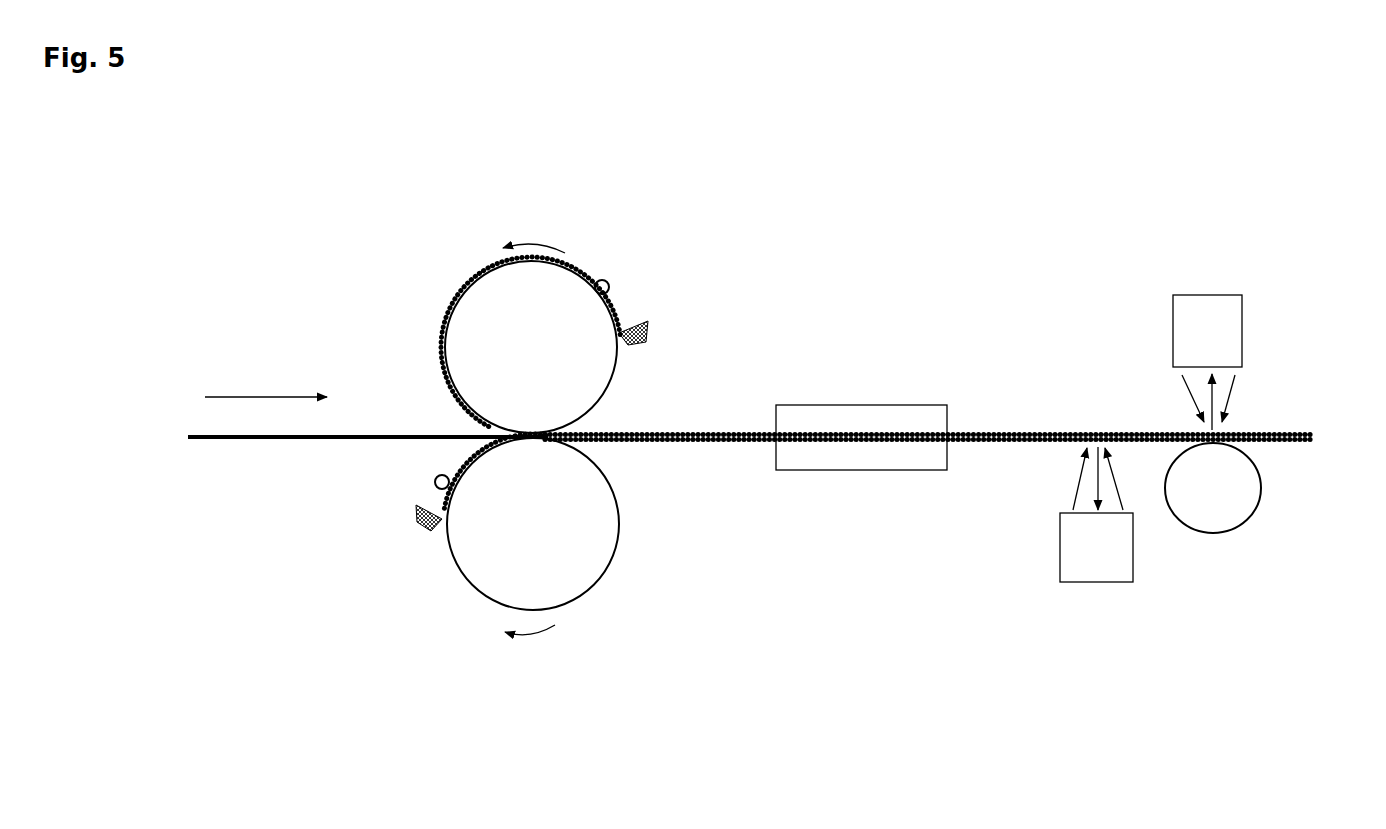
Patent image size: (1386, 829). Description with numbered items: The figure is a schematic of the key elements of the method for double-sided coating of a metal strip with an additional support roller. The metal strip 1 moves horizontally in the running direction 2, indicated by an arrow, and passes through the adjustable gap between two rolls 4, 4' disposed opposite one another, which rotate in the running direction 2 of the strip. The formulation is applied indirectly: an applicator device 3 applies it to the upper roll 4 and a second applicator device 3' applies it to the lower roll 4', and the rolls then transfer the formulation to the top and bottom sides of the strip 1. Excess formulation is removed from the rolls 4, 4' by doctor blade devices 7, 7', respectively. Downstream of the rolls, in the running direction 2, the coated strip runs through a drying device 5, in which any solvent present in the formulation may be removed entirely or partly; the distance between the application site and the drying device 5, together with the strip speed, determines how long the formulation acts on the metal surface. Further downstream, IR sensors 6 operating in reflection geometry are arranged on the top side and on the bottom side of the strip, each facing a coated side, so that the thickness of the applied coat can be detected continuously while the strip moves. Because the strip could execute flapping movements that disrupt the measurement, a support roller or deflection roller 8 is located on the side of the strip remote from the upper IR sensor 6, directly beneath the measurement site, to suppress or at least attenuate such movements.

The metal strip 1 is at (203, 440).
The running direction 2 is at (290, 396).
The applicator device 3 is at (708, 284).
The applicator device 3' is at (356, 591).
The roll 4 is at (495, 316).
The roll 4' is at (594, 550).
The drying device 5 is at (825, 413).
The IR sensor 6 is at (1203, 295).
The doctor blade device 7 is at (675, 219).
The doctor blade device 7' is at (337, 541).
The support roller or deflection roller 8 is at (1218, 510).